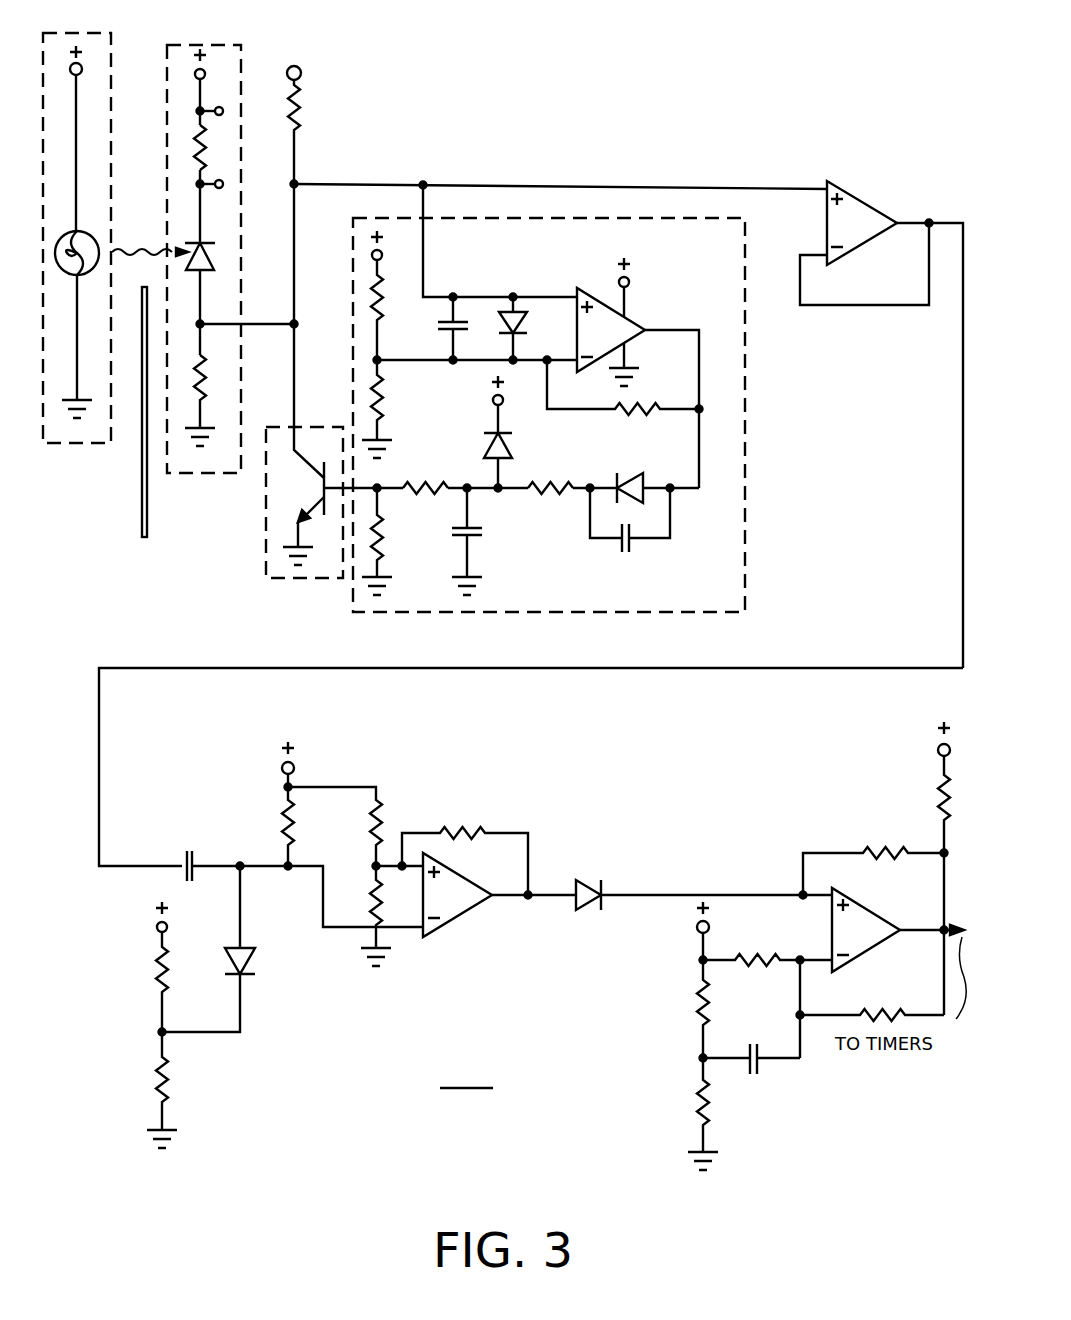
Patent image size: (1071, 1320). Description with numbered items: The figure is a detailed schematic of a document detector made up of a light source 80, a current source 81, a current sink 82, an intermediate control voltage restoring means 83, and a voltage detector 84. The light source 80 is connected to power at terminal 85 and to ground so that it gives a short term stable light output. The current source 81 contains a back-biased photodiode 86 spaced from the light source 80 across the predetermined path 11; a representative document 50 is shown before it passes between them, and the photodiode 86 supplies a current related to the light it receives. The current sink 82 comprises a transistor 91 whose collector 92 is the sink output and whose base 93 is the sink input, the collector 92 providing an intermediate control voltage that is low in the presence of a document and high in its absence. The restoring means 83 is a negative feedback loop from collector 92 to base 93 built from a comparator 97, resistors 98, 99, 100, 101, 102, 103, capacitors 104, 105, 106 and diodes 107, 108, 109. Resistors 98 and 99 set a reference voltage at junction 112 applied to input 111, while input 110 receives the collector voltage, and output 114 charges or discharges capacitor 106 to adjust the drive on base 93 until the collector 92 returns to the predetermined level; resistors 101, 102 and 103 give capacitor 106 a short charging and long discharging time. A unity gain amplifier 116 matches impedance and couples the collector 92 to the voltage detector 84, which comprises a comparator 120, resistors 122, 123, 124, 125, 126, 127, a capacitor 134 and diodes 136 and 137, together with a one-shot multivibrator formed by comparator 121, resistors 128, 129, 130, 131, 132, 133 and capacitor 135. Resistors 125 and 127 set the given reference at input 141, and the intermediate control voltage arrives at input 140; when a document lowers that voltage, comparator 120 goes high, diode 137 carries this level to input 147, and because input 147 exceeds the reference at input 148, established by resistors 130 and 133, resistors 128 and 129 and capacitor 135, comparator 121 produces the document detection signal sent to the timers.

The predetermined path 11 is at (145, 50).
The document 50 is at (142, 506).
The light source 80 is at (88, 268).
The current source 81 is at (190, 473).
The current sink 82 is at (268, 525).
The intermediate control voltage restoring means 83 is at (556, 608).
The voltage detector 84 is at (466, 1075).
The terminal 85 is at (70, 74).
The photodiode 86 is at (212, 270).
The transistor 91 is at (322, 490).
The collector 92 is at (302, 455).
The base 93 is at (320, 505).
The comparator 97 is at (628, 322).
The resistor 98 is at (383, 298).
The resistor 99 is at (383, 398).
The resistor 100 is at (640, 414).
The resistor 101 is at (548, 476).
The resistor 102 is at (420, 476).
The resistor 103 is at (383, 535).
The capacitor 104 is at (458, 332).
The capacitor 105 is at (634, 546).
The capacitor 106 is at (472, 540).
The diode 107 is at (527, 322).
The diode 108 is at (628, 472).
The diode 109 is at (512, 442).
The input 110 is at (574, 291).
The input 111 is at (575, 364).
The junction 112 is at (381, 356).
The output 114 is at (648, 334).
The unity gain amplifier 116 is at (878, 208).
The comparator 120 is at (462, 905).
The comparator 121 is at (870, 913).
The resistor 122 is at (154, 973).
The resistor 123 is at (154, 1086).
The resistor 124 is at (280, 824).
The resistor 125 is at (369, 828).
The resistor 126 is at (460, 828).
The resistor 127 is at (372, 902).
The resistor 128 is at (698, 1000).
The resistor 129 is at (712, 1102).
The resistor 130 is at (780, 954).
The resistor 131 is at (876, 848).
The resistor 132 is at (936, 798).
The resistor 133 is at (888, 1000).
The capacitor 134 is at (179, 845).
The capacitor 135 is at (762, 1068).
The diode 136 is at (255, 958).
The diode 137 is at (588, 878).
The input 140 is at (428, 940).
The input 141 is at (406, 860).
The input 147 is at (820, 888).
The input 148 is at (830, 965).